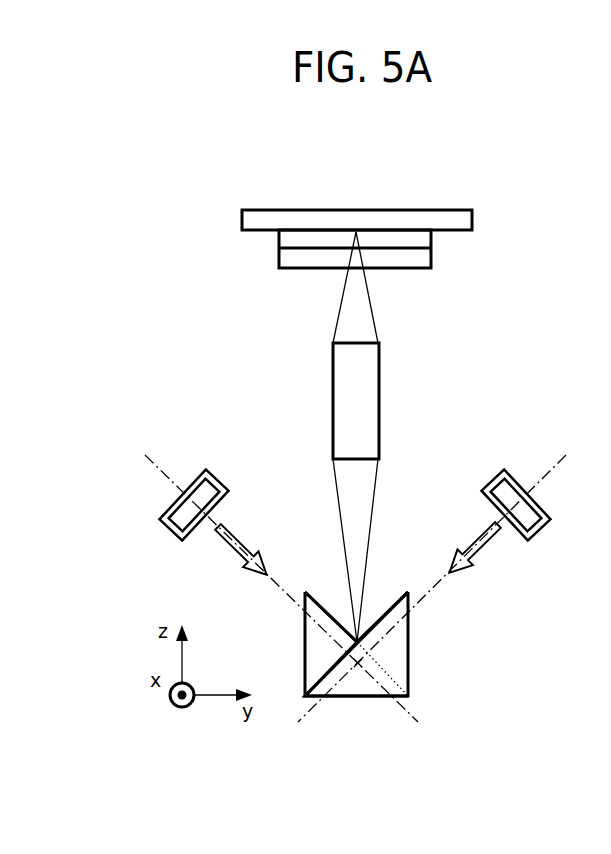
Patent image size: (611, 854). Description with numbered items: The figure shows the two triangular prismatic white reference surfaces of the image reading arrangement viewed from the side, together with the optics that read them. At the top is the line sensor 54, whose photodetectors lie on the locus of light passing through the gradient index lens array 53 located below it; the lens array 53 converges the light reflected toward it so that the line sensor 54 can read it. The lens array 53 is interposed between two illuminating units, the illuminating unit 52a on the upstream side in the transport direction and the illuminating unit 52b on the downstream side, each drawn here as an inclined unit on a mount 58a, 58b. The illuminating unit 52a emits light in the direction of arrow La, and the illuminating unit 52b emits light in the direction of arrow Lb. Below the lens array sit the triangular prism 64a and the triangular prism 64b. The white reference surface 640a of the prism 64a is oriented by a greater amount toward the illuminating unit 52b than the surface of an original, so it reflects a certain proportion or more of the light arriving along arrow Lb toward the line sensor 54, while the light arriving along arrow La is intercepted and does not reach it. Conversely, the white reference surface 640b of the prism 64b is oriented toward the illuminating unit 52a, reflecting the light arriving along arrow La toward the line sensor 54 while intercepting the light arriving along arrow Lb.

The line sensor 54 is at (252, 232).
The gradient index lens array 53 is at (379, 375).
The illuminating unit 52a is at (198, 486).
The illuminating unit 52b is at (512, 486).
The first detector holder 58a is at (168, 527).
The second detector holder 58b is at (542, 527).
The direction of arrow La is at (232, 548).
The direction of arrow Lb is at (478, 546).
The triangular prism 64a is at (305, 652).
The triangular prism 64b is at (408, 652).
The white reference surface 640a is at (330, 612).
The white reference surface 640b is at (383, 612).